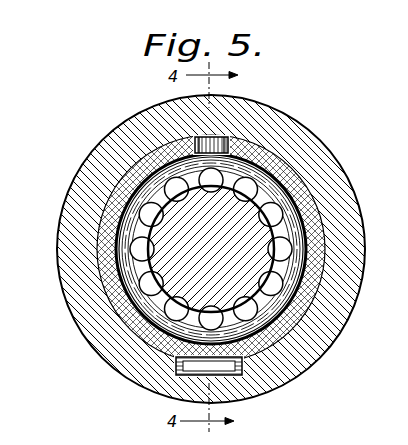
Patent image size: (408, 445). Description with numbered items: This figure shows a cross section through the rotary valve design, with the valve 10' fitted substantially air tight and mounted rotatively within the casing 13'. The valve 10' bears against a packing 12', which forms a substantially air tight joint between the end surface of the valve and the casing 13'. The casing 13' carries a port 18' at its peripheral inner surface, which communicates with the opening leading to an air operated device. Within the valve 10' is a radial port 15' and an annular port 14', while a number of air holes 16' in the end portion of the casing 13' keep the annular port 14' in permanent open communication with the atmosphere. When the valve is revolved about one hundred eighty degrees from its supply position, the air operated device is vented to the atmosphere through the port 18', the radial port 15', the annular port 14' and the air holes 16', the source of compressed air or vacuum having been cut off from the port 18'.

The valve 10' is at (267, 233).
The packing 12' is at (191, 249).
The casing 13' is at (225, 214).
The annular port 14' is at (229, 240).
The radial port 15' is at (237, 116).
The air holes 16' is at (167, 232).
The port 18' is at (179, 394).